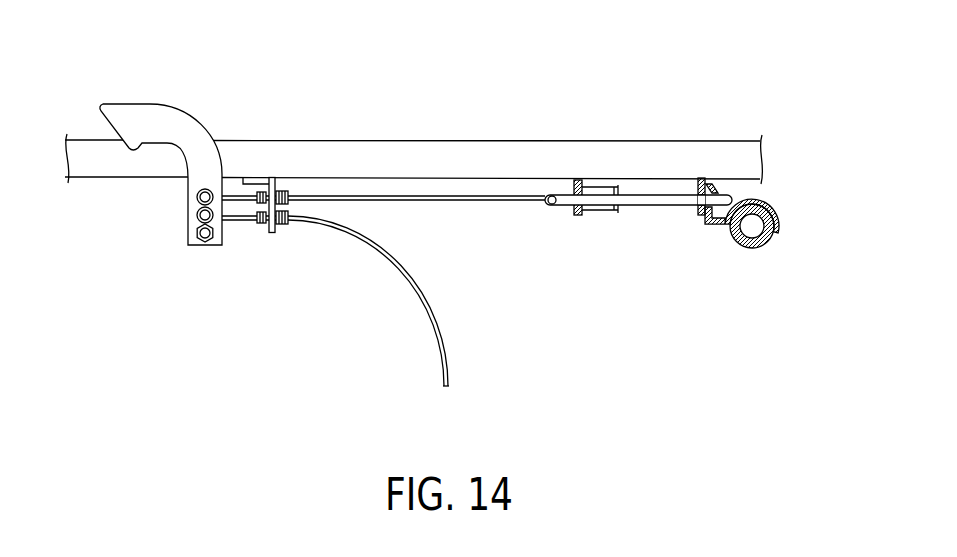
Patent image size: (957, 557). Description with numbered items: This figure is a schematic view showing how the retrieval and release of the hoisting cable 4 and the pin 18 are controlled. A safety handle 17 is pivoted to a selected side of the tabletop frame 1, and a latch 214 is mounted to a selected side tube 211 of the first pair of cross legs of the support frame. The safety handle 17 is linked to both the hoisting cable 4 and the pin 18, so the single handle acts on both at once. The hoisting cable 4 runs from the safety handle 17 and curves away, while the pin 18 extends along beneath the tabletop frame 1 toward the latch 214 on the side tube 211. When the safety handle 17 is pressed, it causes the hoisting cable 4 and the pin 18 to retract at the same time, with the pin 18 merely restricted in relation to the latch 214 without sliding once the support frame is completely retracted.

The tabletop frame 1 is at (393, 155).
The safety handle 17 is at (170, 125).
The hoisting cable 4 is at (415, 280).
The pin 18 is at (645, 207).
The latch 214 is at (712, 223).
The side tube 211 is at (768, 250).